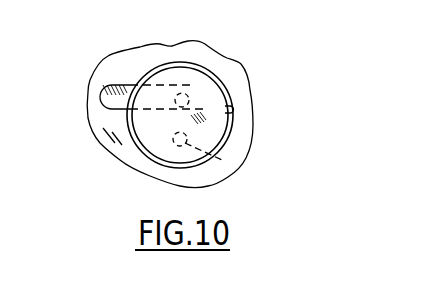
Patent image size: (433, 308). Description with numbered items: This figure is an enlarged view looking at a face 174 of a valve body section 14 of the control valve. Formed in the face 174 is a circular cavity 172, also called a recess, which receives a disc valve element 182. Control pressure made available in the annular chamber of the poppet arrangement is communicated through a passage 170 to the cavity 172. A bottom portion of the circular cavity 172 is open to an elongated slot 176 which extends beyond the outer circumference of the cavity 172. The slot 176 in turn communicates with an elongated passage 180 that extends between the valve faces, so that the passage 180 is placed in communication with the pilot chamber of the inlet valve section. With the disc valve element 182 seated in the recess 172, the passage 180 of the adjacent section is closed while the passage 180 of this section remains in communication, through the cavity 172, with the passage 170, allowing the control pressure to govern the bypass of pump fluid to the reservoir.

The valve body section 14 is at (175, 45).
The passage 170 is at (222, 154).
The cavity 172 is at (226, 110).
The face 174 is at (105, 148).
The elongated slot 176 is at (122, 85).
The elongated passage 180 is at (188, 95).
The disc valve element 182 is at (213, 138).